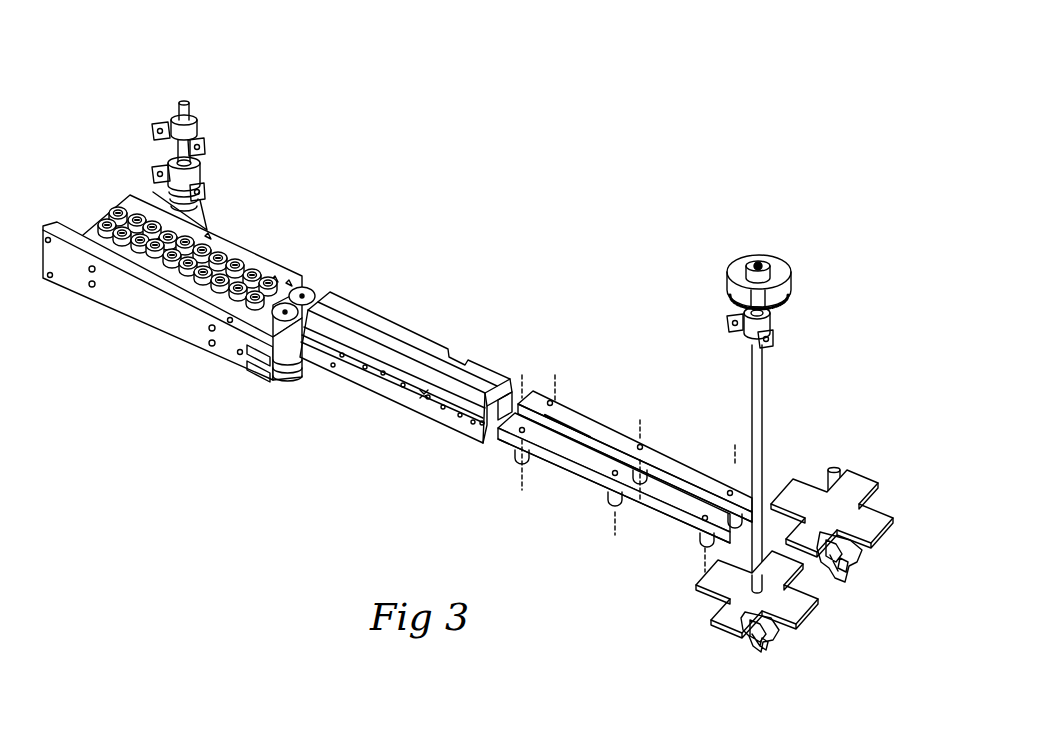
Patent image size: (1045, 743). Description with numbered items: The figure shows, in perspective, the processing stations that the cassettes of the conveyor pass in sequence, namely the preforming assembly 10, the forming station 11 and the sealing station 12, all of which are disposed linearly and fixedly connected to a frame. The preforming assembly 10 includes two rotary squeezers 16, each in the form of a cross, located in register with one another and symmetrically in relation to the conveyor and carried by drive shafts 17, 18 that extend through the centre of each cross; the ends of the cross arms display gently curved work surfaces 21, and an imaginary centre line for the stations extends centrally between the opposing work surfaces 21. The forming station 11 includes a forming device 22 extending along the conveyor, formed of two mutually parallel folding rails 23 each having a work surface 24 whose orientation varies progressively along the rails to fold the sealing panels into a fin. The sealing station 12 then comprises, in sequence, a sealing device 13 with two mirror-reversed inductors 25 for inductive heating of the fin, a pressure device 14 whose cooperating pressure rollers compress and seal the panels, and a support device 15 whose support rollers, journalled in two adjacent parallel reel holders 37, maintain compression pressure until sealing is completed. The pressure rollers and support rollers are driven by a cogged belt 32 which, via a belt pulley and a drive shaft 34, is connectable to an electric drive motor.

The preforming assembly 10 is at (866, 308).
The forming station 11 is at (566, 308).
The sealing station 12 is at (344, 138).
The sealing device 13 is at (447, 316).
The pressure device 14 is at (325, 263).
The support device 15 is at (83, 188).
The rotary squeezers 16 is at (872, 524).
The drive shaft 17 is at (757, 388).
The drive shaft 18 is at (828, 472).
The work surfaces 21 is at (887, 530).
The forming device 22 is at (625, 402).
The folding rails 23 is at (583, 420).
The work surface 24 is at (677, 477).
The inductors 25 is at (393, 337).
The cogged belt 32 is at (165, 195).
The drive shaft 34 is at (193, 162).
The reel holders 37 is at (223, 245).